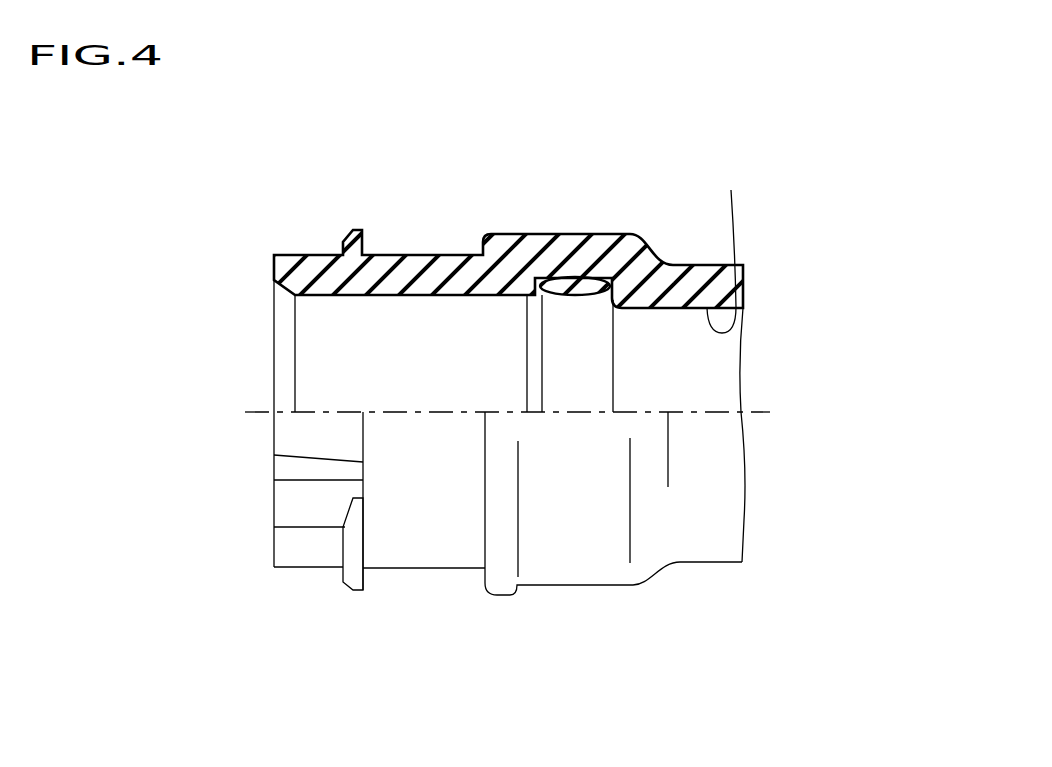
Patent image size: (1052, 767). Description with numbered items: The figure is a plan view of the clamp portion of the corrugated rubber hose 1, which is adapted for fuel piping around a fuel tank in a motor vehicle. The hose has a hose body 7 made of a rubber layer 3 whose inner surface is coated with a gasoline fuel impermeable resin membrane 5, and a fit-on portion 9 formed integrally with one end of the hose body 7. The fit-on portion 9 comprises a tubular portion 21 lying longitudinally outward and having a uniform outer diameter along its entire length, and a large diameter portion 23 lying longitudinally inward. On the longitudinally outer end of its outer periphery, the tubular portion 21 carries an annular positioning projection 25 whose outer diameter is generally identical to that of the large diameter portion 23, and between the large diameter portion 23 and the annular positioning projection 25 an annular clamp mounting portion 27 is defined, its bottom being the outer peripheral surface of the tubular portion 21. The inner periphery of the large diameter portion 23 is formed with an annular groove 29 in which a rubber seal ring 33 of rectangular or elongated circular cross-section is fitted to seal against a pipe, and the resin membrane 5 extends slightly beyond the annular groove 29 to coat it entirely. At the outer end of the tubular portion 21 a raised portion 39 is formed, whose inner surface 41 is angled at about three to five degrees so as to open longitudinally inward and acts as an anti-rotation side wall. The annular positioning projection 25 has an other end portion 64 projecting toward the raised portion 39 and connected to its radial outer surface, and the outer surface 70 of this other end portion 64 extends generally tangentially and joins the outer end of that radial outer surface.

The corrugated rubber hose 1 is at (352, 158).
The rubber layer 3 is at (700, 265).
The resin membrane 5 is at (723, 246).
The hose body 7 is at (700, 569).
The fit-on portion 9 is at (407, 230).
The tubular portion 21 is at (405, 573).
The large diameter portion 23 is at (568, 587).
The annular positioning projection 25 is at (345, 583).
The annular clamp mounting portion 27 is at (420, 443).
The annular groove 29 is at (613, 283).
The rubber seal ring 33 is at (563, 286).
The raised portion 39 is at (318, 472).
The inner surface 41 is at (302, 457).
The other end portion 64 is at (363, 538).
The outer surface 70 is at (360, 527).